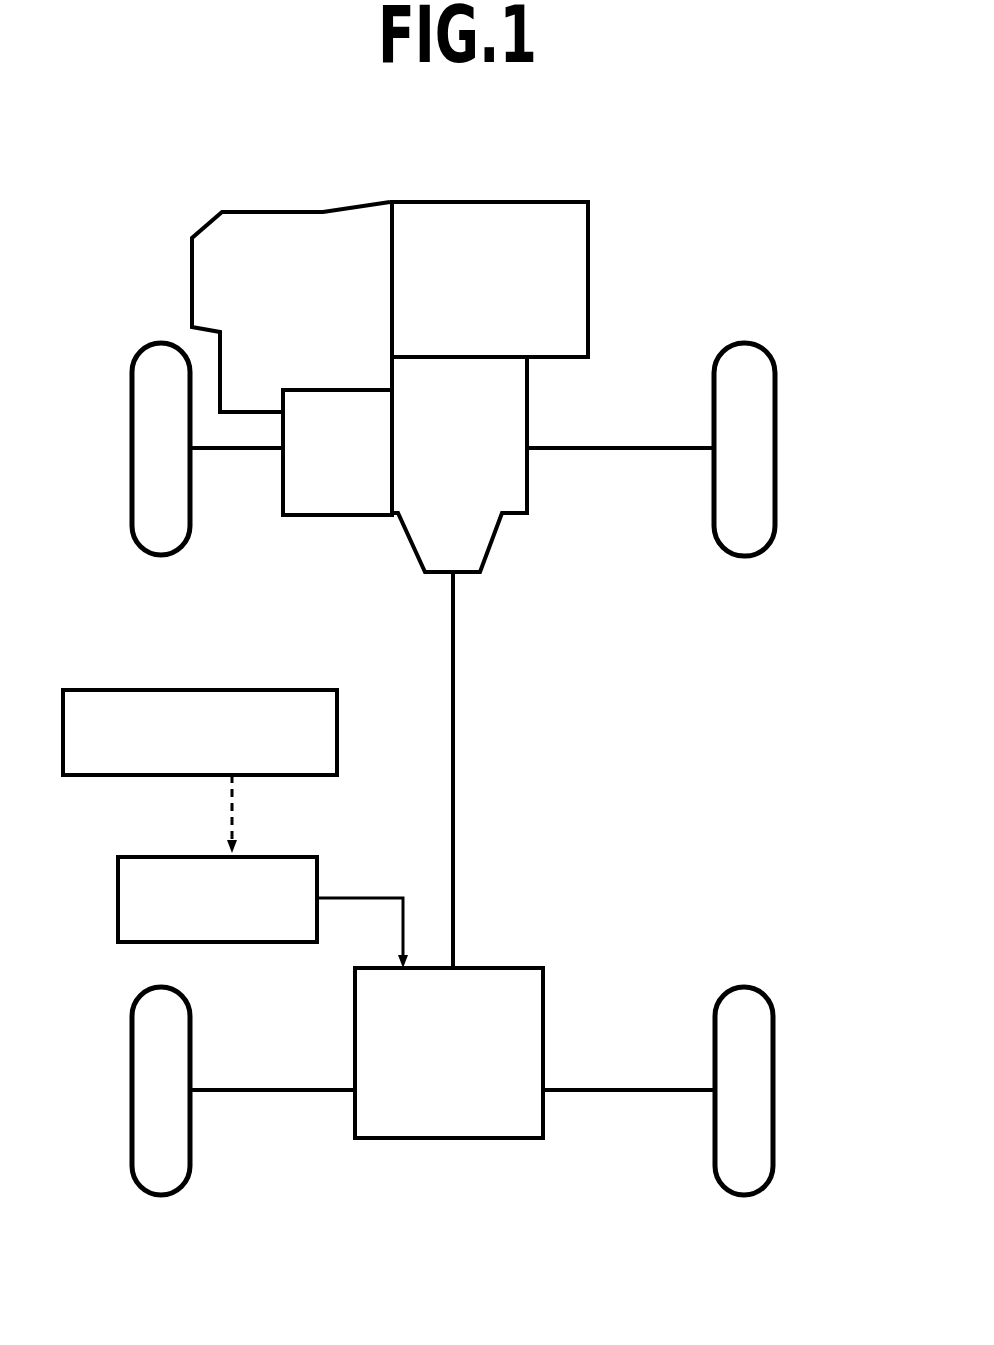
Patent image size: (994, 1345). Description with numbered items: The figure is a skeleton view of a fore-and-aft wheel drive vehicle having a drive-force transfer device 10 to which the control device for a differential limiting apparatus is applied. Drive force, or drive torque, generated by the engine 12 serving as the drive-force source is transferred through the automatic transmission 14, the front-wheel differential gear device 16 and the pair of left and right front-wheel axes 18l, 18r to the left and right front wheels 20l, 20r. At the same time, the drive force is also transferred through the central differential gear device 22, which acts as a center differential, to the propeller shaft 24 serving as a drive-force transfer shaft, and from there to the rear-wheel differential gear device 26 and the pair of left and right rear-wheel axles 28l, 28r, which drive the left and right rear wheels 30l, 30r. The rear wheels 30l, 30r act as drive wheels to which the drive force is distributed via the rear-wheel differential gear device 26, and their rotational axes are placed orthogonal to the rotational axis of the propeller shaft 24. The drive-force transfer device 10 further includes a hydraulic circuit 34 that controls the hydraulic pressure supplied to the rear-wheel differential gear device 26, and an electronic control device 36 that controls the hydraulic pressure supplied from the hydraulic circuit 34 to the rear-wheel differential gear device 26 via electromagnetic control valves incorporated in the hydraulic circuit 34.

The drive-force transfer device 10 is at (762, 160).
The engine 12 is at (580, 222).
The automatic transmission 14 is at (258, 220).
The front-wheel differential gear device 16 is at (352, 505).
The left front-wheel axis 18l is at (230, 455).
The right front-wheel axis 18r is at (590, 447).
The left front wheel 20l is at (143, 505).
The right front wheel 20r is at (761, 504).
The central differential gear device 22 is at (483, 542).
The propeller shaft 24 is at (453, 830).
The rear-wheel differential gear device 26 is at (463, 1130).
The left rear-wheel axle 28l is at (250, 1093).
The right rear-wheel axle 28r is at (653, 1093).
The left rear wheel 30l is at (143, 1143).
The right rear wheel 30r is at (760, 1143).
The hydraulic circuit 34 is at (277, 863).
The electronic control device 36 is at (277, 697).